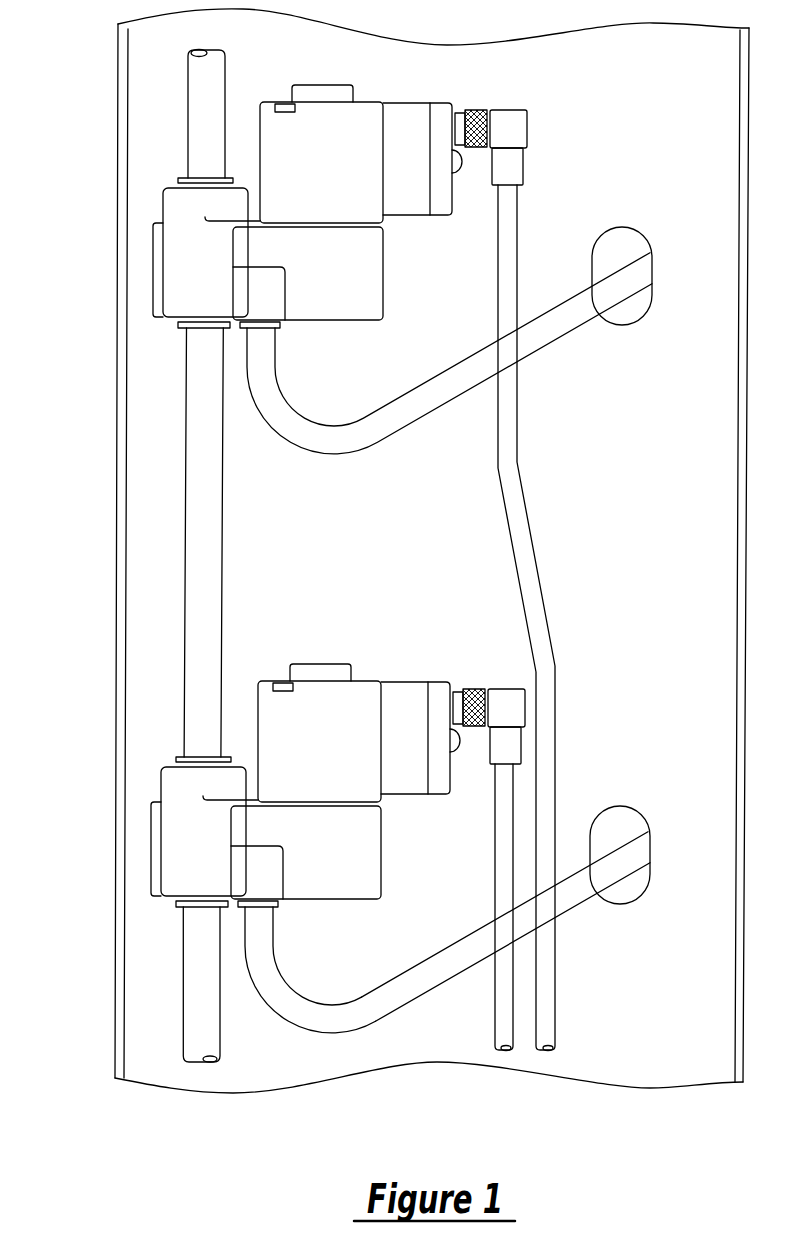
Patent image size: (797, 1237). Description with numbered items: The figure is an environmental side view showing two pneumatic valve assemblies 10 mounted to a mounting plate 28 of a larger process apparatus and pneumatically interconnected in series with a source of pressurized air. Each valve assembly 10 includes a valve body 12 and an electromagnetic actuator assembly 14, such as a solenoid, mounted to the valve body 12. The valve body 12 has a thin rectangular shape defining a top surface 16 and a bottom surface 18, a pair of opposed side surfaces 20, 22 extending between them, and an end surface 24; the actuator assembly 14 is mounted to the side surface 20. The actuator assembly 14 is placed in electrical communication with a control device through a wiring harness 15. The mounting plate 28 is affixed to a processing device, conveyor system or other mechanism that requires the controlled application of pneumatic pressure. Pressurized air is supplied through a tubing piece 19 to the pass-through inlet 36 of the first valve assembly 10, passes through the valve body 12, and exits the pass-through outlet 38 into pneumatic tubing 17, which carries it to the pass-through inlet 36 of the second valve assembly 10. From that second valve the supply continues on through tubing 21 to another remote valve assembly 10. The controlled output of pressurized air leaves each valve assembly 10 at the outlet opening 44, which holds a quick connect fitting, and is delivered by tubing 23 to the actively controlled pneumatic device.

The valve assembly 10 is at (402, 228).
The valve body 12 is at (306, 888).
The electromagnetic actuator assembly 14 is at (359, 708).
The wiring harness 15 is at (489, 686).
The top surface 16 is at (343, 875).
The pneumatic conduit or tubing 17 is at (244, 552).
The bottom surface 18 is at (156, 831).
The tubing piece 19 is at (219, 1030).
The side surface 20 is at (230, 740).
The tubing 21 is at (225, 78).
The side surface 22 is at (310, 967).
The tubing 23 is at (506, 924).
The end surface 24 is at (326, 856).
The mounting plate 28 is at (115, 980).
The pass-through inlet 36 is at (185, 933).
The pass-through outlet 38 is at (189, 735).
The outlet opening 44 is at (253, 953).